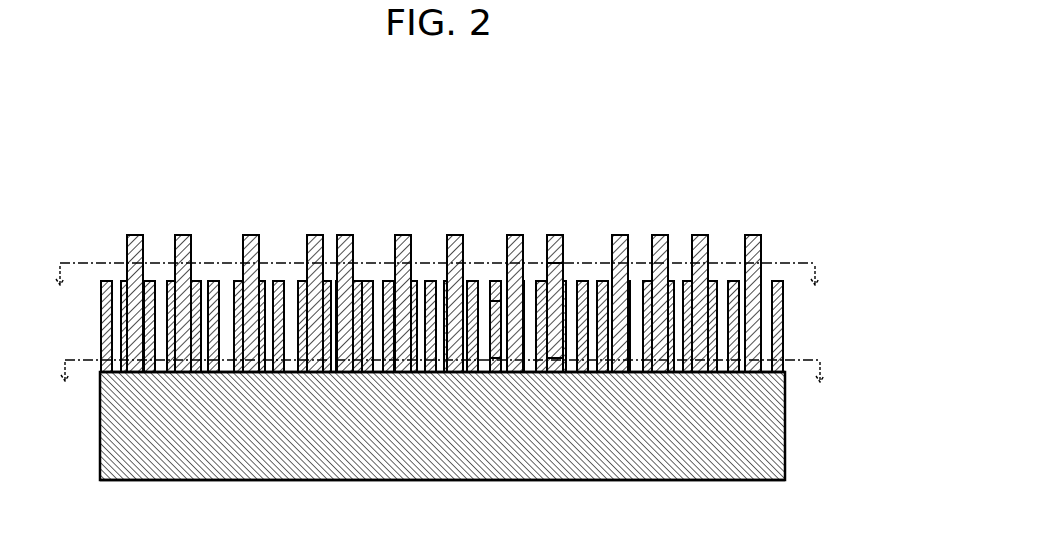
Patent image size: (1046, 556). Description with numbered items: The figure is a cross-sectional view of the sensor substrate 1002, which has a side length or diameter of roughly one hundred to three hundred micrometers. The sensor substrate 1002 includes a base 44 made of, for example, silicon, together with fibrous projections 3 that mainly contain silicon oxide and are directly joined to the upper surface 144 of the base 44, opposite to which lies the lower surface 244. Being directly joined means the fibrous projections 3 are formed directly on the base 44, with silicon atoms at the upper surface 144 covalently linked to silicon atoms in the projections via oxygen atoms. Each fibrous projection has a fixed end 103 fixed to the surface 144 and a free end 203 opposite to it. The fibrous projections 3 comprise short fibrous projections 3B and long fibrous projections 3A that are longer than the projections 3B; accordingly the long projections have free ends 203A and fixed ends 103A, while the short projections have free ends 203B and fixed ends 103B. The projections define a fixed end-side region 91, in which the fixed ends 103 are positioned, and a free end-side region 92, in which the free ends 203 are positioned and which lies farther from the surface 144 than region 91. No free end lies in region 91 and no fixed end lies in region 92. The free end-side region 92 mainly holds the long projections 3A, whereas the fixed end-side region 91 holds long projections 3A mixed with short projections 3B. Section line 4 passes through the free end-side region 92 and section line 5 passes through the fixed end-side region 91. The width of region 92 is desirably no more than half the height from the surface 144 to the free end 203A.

The sensor substrate 1002 is at (766, 182).
The fibrous projections 3 is at (487, 300).
The long fibrous projections 3A is at (760, 260).
The short fibrous projections 3B is at (780, 349).
The free ends 203 is at (580, 236).
The free end of fibrous projection 3A 203A is at (561, 235).
The free end of fibrous projection 3B 203B is at (497, 283).
The fixed ends 103 is at (575, 445).
The fixed end of fibrous projection 3A 103A is at (557, 373).
The fixed end of fibrous projection 3B 103B is at (496, 373).
The base 44 is at (765, 448).
The upper surface of base 144 is at (288, 372).
The lower surface of base 244 is at (247, 481).
The free end-side region 92 is at (98, 291).
The fixed end-side region 91 is at (98, 368).
The line 4- 4 is at (438, 293).
The line 5- 5 is at (440, 389).